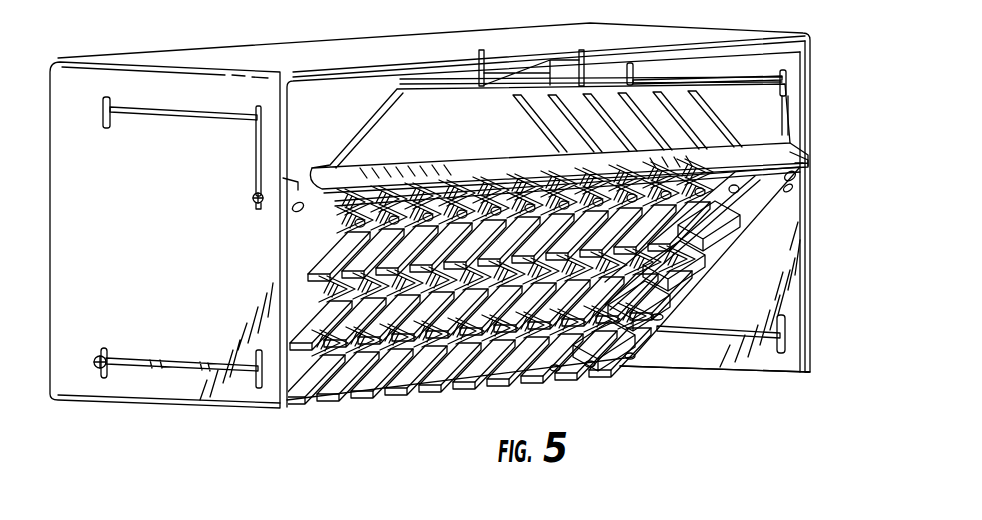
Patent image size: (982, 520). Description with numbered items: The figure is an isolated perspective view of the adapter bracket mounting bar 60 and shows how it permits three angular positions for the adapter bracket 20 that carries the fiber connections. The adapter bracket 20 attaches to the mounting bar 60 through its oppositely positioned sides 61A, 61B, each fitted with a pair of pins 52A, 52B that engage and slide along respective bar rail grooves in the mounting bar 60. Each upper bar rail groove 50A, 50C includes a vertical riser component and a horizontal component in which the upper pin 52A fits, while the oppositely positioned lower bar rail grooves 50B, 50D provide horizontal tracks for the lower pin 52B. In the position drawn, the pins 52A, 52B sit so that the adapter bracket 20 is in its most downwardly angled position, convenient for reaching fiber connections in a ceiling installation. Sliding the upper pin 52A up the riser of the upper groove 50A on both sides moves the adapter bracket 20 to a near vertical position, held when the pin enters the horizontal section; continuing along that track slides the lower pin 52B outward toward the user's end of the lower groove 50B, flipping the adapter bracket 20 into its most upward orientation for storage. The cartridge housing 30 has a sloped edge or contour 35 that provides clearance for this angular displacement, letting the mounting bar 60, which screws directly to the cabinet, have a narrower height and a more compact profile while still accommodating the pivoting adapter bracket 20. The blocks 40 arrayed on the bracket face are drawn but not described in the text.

The adapter bracket mounting bar 60 is at (367, 50).
The sloped edge 35 is at (483, 88).
The cartridge housing 30 is at (455, 146).
The side of the adapter bracket 61A is at (297, 182).
The side of the adapter bracket 61B is at (803, 157).
The upper bar rail groove 50A is at (185, 117).
The lower bar rail groove 50B is at (143, 360).
The upper bar rail groove 50C is at (727, 82).
The lower bar rail groove 50D is at (733, 330).
The upper pin 52A is at (252, 200).
The lower pin 52B is at (99, 357).
The adapter bracket 20 is at (615, 360).
The connector blocks 40 is at (470, 380).